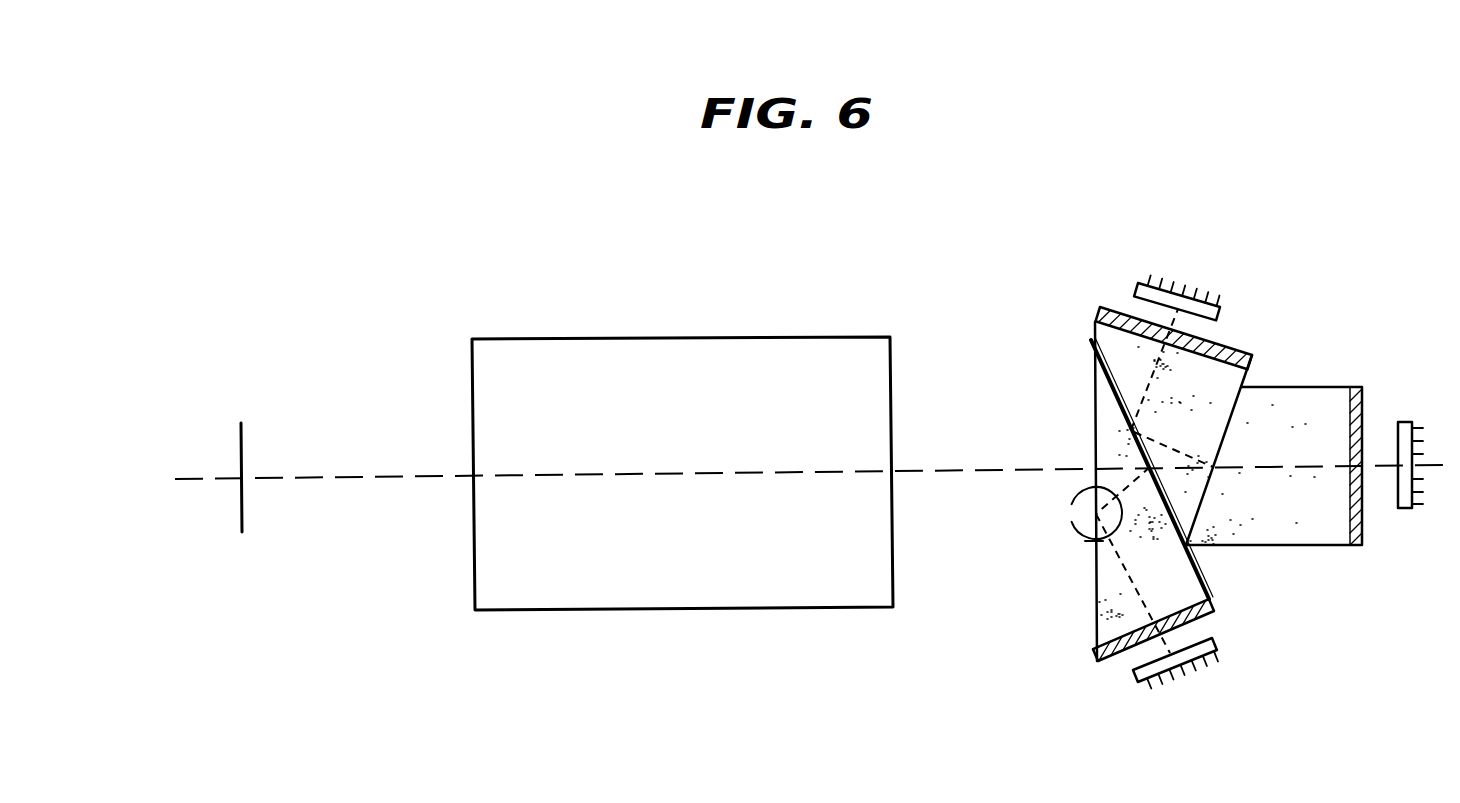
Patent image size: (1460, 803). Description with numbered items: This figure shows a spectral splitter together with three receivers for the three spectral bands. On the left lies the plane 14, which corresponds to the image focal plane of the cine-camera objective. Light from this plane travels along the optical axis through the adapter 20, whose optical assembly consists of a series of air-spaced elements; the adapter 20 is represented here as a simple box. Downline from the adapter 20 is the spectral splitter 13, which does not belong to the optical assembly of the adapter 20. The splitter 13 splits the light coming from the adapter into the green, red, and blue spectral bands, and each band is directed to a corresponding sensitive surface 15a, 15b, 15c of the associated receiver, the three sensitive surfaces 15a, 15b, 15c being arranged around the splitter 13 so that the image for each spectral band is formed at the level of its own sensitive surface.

The spectral splitter 13 is at (1095, 323).
The plane 14 is at (241, 440).
The sensitive surface 15a is at (1223, 314).
The sensitive surface 15b is at (1402, 420).
The sensitive surface 15c is at (1217, 645).
The adapter 20 is at (698, 338).